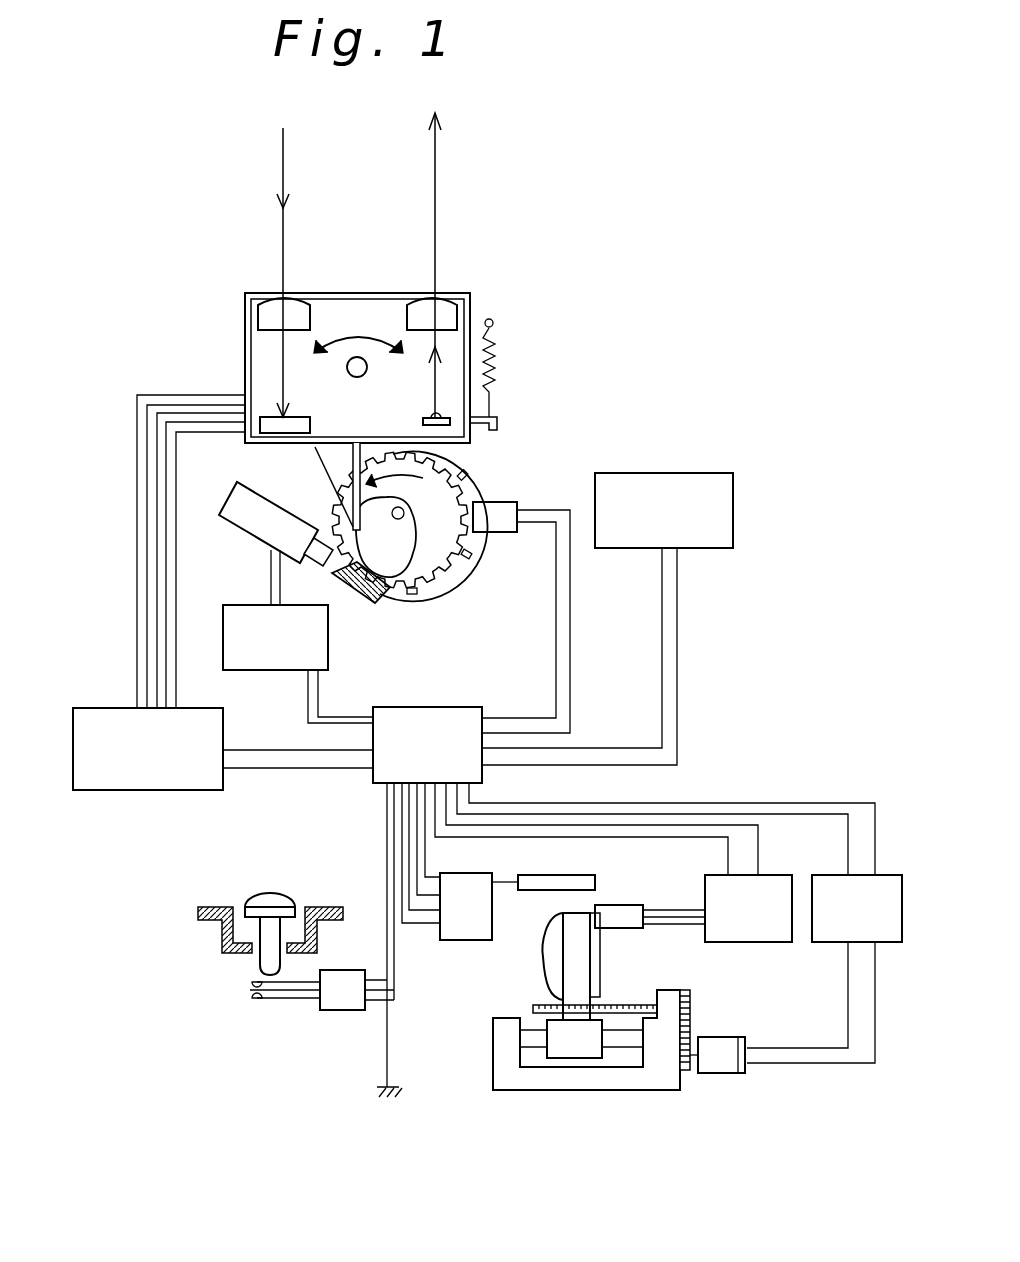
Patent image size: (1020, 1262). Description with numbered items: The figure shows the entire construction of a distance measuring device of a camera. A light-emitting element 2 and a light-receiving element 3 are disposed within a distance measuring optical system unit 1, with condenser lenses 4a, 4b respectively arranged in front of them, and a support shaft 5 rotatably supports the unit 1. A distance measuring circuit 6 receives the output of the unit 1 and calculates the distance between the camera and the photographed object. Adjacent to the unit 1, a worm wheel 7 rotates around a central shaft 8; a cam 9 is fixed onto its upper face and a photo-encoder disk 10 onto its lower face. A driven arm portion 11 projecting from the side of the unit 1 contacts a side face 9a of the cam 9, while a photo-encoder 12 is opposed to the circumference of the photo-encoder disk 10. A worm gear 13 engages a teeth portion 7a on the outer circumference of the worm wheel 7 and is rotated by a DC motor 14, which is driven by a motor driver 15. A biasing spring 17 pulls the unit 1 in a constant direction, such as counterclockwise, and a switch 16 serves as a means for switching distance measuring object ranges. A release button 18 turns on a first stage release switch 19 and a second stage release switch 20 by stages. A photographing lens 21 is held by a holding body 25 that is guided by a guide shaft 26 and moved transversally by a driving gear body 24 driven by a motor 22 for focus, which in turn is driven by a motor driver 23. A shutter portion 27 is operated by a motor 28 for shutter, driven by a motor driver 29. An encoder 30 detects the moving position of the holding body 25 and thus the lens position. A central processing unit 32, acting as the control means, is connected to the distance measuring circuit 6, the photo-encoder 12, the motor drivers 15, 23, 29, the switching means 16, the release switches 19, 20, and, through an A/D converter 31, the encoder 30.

The distance measuring optical system unit 1 is at (348, 305).
The light-emitting element 2 is at (433, 416).
The light-receiving element 3 is at (277, 423).
The condenser lens 4a is at (443, 312).
The condenser lens 4b is at (268, 312).
The support shaft 5 is at (357, 378).
The distance measuring circuit 6 is at (128, 792).
The worm wheel 7 is at (447, 568).
The teeth portion 7a is at (472, 547).
The central shaft 8 is at (457, 465).
The cam 9 is at (398, 562).
The side face 9a is at (467, 477).
The photo-encoder disk 10 is at (318, 502).
The driven arm portion 11 is at (333, 453).
The photo-encoder 12 is at (505, 515).
The worm gear 13 is at (372, 600).
The DC motor 14 is at (253, 518).
The motor driver 15 is at (277, 672).
The switch 16 is at (733, 482).
The biasing spring 17 is at (493, 350).
The release button 18 is at (275, 897).
The first stage release switch 19 is at (248, 982).
The second stage release switch 20 is at (250, 1000).
The photographing lens 21 is at (552, 963).
The motor for focus 22 is at (730, 1040).
The motor driver 23 is at (895, 876).
The driving gear body 24 is at (650, 1005).
The holding body 25 is at (573, 1050).
The guide shaft 26 is at (630, 1050).
The shutter portion 27 is at (600, 962).
The motor for shutter 28 is at (630, 908).
The motor driver 29 is at (787, 876).
The encoder for detecting a position of the photographing lens 30 is at (585, 882).
The A/D converter 31 is at (452, 935).
The central processing unit 32 is at (385, 784).